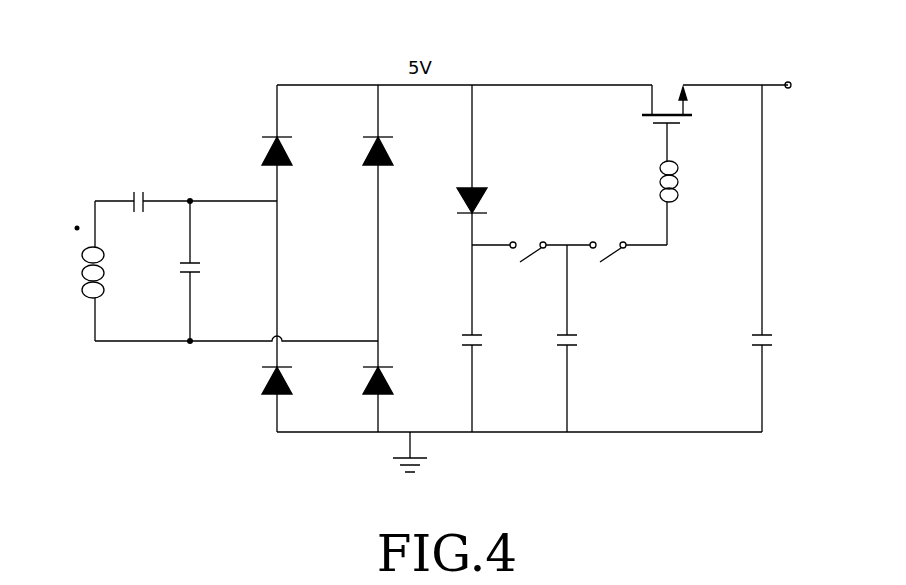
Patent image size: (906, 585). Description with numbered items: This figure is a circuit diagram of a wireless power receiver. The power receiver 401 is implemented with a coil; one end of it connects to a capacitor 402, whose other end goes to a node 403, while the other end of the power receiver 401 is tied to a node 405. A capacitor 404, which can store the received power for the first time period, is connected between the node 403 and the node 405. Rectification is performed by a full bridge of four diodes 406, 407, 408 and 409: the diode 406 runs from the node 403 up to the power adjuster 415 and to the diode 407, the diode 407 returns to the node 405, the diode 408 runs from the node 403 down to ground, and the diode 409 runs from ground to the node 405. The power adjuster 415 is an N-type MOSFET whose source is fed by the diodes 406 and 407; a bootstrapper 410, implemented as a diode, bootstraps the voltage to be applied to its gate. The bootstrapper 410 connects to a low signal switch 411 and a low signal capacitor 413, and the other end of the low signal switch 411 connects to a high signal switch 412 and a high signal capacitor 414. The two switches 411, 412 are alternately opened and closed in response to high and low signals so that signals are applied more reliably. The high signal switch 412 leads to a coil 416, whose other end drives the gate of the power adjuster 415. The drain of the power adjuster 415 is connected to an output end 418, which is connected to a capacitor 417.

The power receiver 401 is at (80, 278).
The capacitor 402 is at (138, 187).
The node 403 is at (190, 195).
The capacitor 404 is at (205, 270).
The node 405 is at (95, 346).
The diode 406 is at (294, 150).
The diode 407 is at (395, 150).
The diode 408 is at (294, 380).
The diode 409 is at (395, 380).
The bootstrapper 410 is at (457, 203).
The low signal switch 411 is at (524, 236).
The high signal switch 412 is at (604, 236).
The low signal capacitor 413 is at (483, 340).
The high signal capacitor 414 is at (578, 340).
The power adjuster 415 is at (664, 84).
The coil 416 is at (680, 182).
The capacitor 417 is at (773, 340).
The output end 418 is at (788, 80).